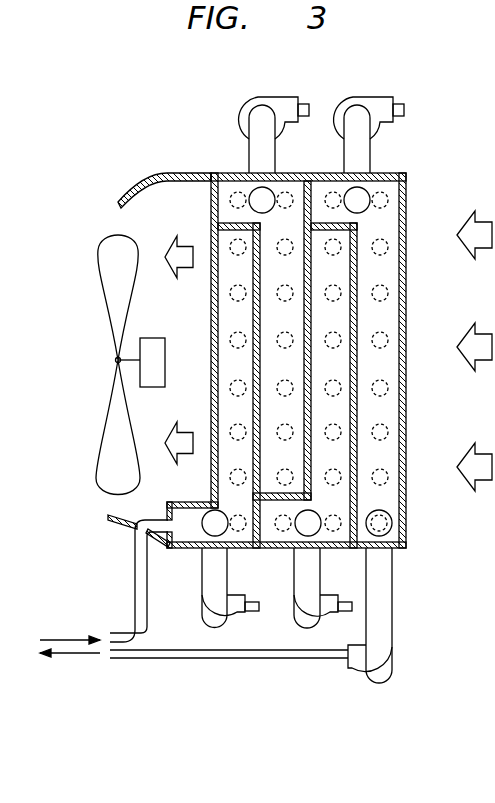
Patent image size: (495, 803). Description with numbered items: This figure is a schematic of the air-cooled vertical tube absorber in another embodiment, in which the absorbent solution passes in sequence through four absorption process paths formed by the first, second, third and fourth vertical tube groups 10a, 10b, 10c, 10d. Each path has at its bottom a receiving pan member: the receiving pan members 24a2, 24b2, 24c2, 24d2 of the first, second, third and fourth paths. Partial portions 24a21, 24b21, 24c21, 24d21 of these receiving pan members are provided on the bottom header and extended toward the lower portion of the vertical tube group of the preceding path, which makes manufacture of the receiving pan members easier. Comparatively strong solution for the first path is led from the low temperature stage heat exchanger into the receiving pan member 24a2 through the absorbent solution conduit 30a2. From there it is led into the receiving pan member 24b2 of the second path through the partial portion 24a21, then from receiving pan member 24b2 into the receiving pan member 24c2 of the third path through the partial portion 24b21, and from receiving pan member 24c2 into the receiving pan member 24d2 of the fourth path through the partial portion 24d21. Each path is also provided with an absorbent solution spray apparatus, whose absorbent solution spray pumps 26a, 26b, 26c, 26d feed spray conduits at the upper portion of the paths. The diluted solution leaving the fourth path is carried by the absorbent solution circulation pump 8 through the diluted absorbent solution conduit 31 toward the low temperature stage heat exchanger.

The absorbent solution circulation pump 8 is at (405, 681).
The first vertical tube group 10a is at (245, 476).
The second vertical tube group 10b is at (287, 380).
The third vertical tube group 10c is at (341, 334).
The fourth vertical tube group 10d is at (385, 289).
The receiving pan member of the first path 24a2 is at (214, 370).
The partial portion of the first path receiving pan member 24a21 is at (179, 505).
The receiving pan member of the second path 24b2 is at (293, 226).
The partial portion of the second path receiving pan member 24b21 is at (227, 188).
The receiving pan member of the third path 24c2 is at (343, 253).
The partial portion of the third path receiving pan member 24c21 is at (284, 548).
The receiving pan member of the fourth path 24d2 is at (392, 413).
The partial portion of the fourth path receiving pan member 24d21 is at (322, 192).
The absorbent solution spray pump 26a is at (193, 602).
The absorbent solution spray pump 26b is at (262, 96).
The absorbent solution spray pump 26c is at (284, 607).
The absorbent solution spray pump 26d is at (357, 96).
The absorbent solution conduit 30a2 is at (134, 568).
The diluted absorbent solution conduit 31 is at (212, 662).